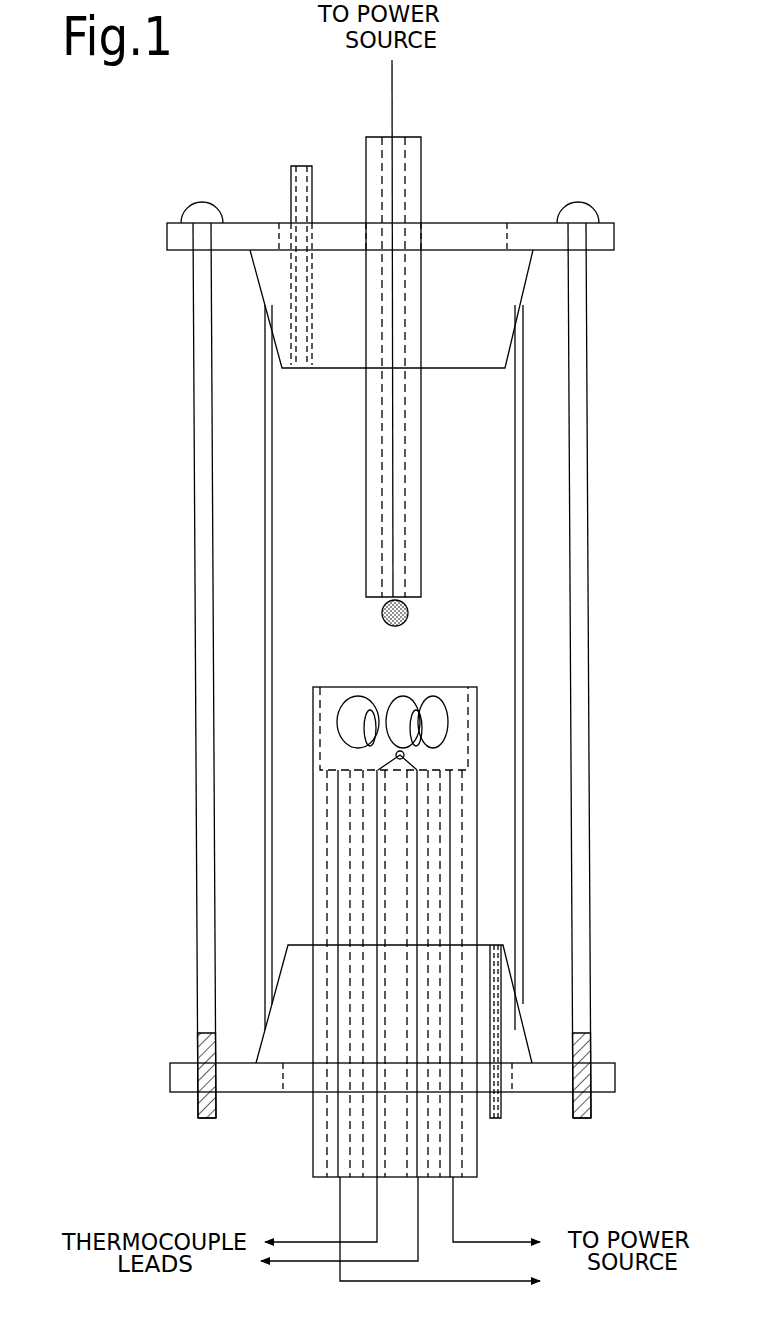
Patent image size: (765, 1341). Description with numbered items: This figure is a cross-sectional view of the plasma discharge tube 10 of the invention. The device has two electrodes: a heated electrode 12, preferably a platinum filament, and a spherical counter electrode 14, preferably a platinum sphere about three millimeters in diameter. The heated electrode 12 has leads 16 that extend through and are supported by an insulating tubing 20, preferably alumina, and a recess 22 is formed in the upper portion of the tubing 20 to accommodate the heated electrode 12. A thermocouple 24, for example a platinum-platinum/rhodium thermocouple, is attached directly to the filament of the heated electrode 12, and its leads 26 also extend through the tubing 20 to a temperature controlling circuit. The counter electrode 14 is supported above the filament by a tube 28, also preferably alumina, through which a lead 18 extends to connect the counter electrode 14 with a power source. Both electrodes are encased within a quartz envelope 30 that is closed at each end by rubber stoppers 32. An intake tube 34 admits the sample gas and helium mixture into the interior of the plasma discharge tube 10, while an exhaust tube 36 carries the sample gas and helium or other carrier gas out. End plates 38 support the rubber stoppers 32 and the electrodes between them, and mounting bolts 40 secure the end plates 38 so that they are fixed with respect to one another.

The plasma discharge tube 10 is at (150, 745).
The heated electrode 12 is at (430, 697).
The spherical counter electrode 14 is at (408, 611).
The leads 16 is at (338, 851).
The lead 18 is at (393, 422).
The tubing 20 is at (477, 787).
The recess 22 is at (333, 692).
The thermocouple 24 is at (404, 752).
The leads 26 is at (377, 907).
The tube 28 is at (421, 524).
The quartz envelope 30 is at (523, 665).
The rubber stoppers 32 is at (500, 298).
The intake tube 34 is at (501, 1100).
The exhaust tube 36 is at (291, 185).
The end plates 38 is at (614, 228).
The mounting bolts 40 is at (193, 512).